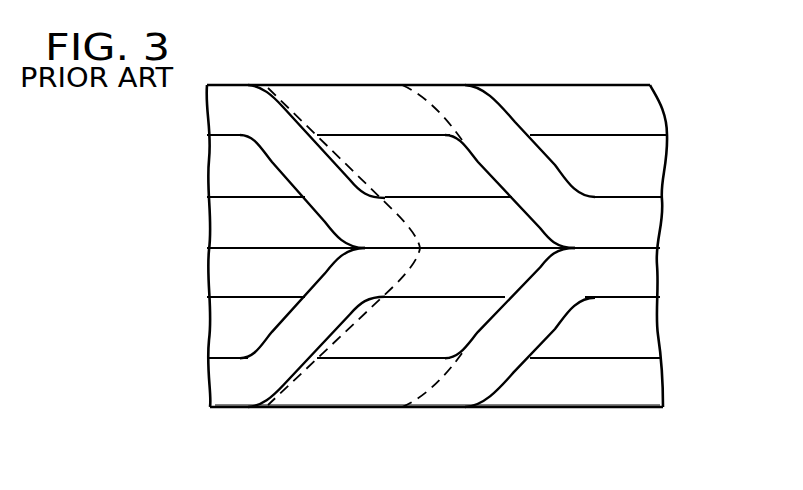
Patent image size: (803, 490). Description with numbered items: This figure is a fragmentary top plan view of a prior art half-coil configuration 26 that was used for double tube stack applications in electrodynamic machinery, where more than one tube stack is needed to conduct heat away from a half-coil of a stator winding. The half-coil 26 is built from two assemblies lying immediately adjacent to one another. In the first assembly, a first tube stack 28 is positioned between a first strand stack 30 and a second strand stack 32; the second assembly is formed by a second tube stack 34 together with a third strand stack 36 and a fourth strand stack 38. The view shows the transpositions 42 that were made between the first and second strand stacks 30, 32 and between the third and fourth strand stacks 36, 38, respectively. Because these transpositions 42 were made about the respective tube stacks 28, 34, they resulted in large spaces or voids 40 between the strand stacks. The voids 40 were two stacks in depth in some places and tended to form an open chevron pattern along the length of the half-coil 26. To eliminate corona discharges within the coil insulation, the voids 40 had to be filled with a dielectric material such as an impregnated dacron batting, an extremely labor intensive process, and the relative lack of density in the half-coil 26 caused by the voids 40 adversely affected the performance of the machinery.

The half-coil configuration 26 is at (660, 57).
The first tube stack 28 is at (652, 173).
The first strand stack 30 is at (643, 112).
The second strand stack 32 is at (650, 220).
The second tube stack 34 is at (638, 335).
The third strand stack 36 is at (650, 280).
The fourth strand stack 38 is at (633, 390).
The voids 40 is at (388, 155).
The transpositions 42 is at (513, 143).